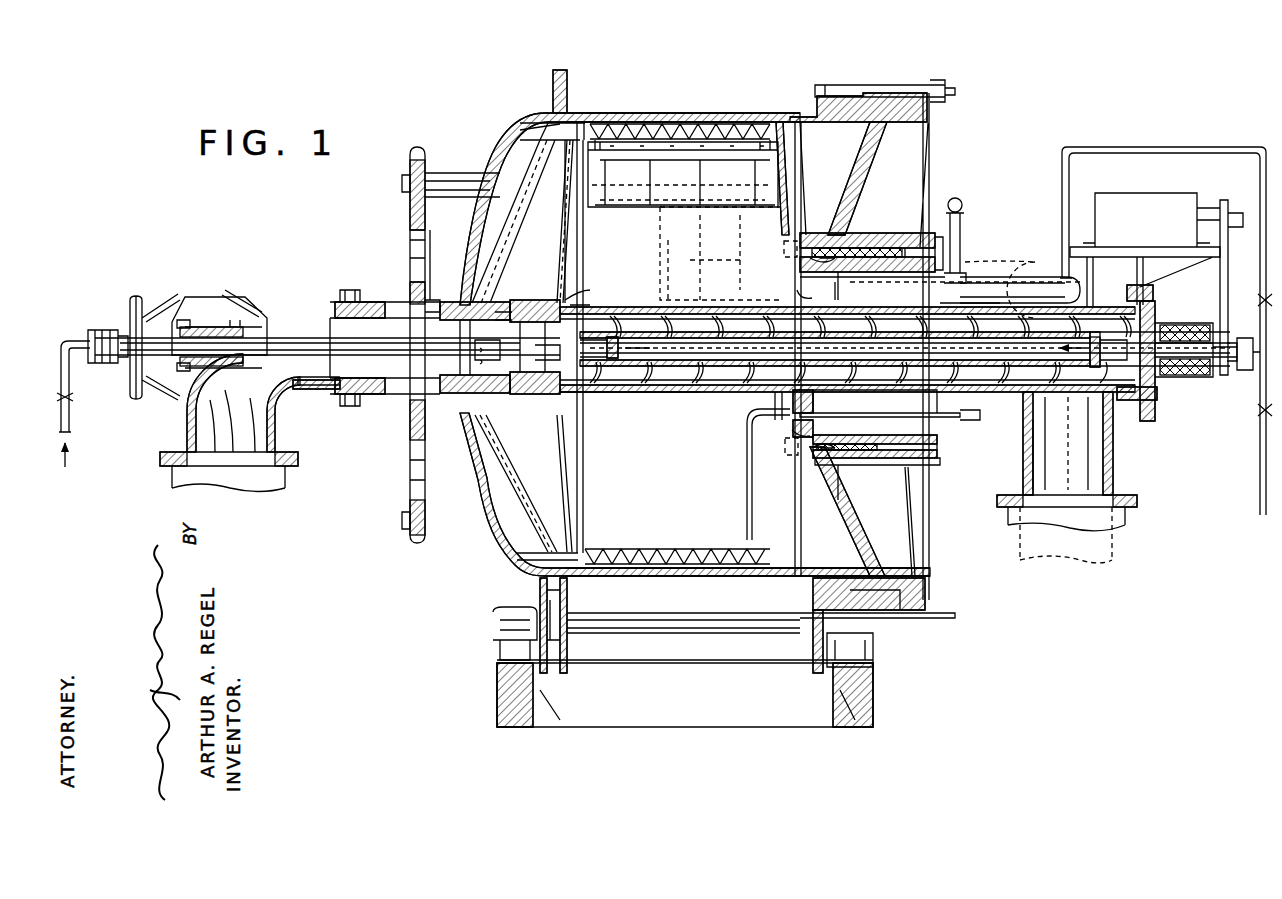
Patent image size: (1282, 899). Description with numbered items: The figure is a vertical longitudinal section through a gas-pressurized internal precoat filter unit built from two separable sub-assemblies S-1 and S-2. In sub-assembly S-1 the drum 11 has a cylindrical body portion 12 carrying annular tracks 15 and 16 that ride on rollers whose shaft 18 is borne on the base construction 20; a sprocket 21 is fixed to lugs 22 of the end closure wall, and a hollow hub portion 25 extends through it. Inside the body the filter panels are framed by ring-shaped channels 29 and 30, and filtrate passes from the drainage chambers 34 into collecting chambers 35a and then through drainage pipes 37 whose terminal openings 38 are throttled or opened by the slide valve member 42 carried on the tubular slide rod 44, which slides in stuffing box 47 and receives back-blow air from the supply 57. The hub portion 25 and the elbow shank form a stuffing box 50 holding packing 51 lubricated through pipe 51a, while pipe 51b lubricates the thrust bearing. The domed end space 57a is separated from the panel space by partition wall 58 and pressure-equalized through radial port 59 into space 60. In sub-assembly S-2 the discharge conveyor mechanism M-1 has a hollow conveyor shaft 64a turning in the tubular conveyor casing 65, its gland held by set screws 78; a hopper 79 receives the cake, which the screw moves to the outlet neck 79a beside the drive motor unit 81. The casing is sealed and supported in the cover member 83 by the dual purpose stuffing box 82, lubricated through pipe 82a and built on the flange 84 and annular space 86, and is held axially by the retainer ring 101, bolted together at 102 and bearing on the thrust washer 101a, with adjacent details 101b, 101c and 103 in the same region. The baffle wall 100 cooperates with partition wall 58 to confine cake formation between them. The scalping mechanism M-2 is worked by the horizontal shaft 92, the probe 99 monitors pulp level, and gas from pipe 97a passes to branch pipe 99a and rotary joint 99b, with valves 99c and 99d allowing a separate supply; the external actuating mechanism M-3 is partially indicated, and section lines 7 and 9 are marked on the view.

The section line 9- 9 is at (1050, 42).
The section line 7- 7 is at (1012, 110).
The shell or drum 11 is at (503, 568).
The cylindrical body portion 12 is at (672, 114).
The annular track 15 is at (570, 72).
The annular track 16 is at (838, 77).
The shaft 18 is at (672, 624).
The horizontal frame or base construction 20 is at (693, 703).
The sprocket 21 is at (410, 158).
The lugs 22 is at (456, 178).
The hollow hub portion 25 is at (438, 296).
The ring-shaped channel member 29 is at (584, 133).
The ring-shaped channel 30 is at (772, 125).
The drainage chambers 34 is at (716, 126).
The collecting chambers 35a is at (540, 128).
The filtrate discharge or drainage pipe 37 is at (545, 205).
The terminal openings 38 is at (470, 369).
The slide valve member 42 is at (498, 312).
The tubular slide rod 44 is at (298, 350).
The stuffing box 47 is at (240, 392).
The stuffing box 50 is at (392, 432).
The packing 51 is at (432, 408).
The pipe 51a is at (242, 281).
The pipe 51b is at (298, 403).
The back blow gas or pressure air supply 57 is at (76, 418).
The domed end space 57a is at (512, 170).
The annular transverse baffle or partition wall 58 is at (556, 258).
The radial port 59 is at (575, 286).
The space 60 is at (535, 359).
The hollow conveyor shaft 64a is at (1078, 386).
The tubular conveyor casing 65 is at (645, 393).
The set screws 78 is at (1190, 333).
The hopper 79 is at (585, 237).
The outlet neck 79a is at (1113, 459).
The drive motor unit 81 is at (1153, 240).
The dual purpose stuffing box 82 is at (915, 243).
The pipe 82a is at (980, 262).
The cover member 83 is at (864, 181).
The annular member or flange 84 is at (775, 404).
The annular space 86 is at (882, 410).
The horizontal shaft 92 is at (740, 300).
The pipe 97a is at (1012, 282).
The bubble type probe 99 is at (747, 496).
The branch pipe 99a is at (1206, 150).
The rotary joint 99b is at (1243, 372).
The valve 99c is at (1257, 300).
The valve 99d is at (1257, 412).
The transverse annular baffle wall 100 is at (786, 164).
The retainer ring 101 is at (805, 238).
The thrust washer 101a is at (828, 245).
The seal ring 101b is at (838, 247).
The seal ring 101c is at (808, 275).
The bolted connection 102 is at (784, 250).
The passage 103 is at (795, 275).
The sub-assembly unit S-1 is at (500, 128).
The sub-assembly unit S-2 is at (1092, 578).
The discharge conveyor mechanism M-1 is at (696, 398).
The filter cake scalping mechanism M-2 is at (660, 182).
The external actuating mechanism M-3 is at (968, 236).